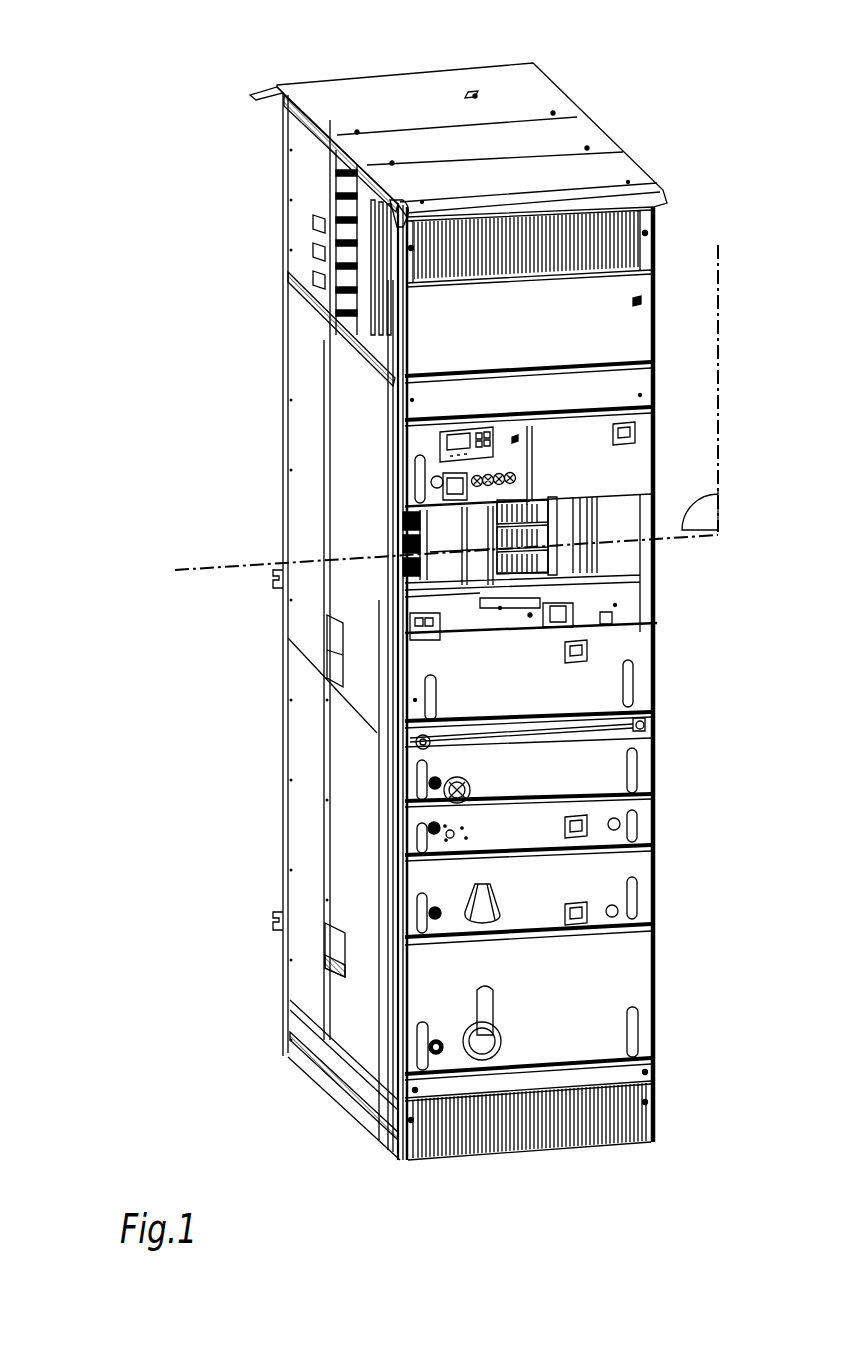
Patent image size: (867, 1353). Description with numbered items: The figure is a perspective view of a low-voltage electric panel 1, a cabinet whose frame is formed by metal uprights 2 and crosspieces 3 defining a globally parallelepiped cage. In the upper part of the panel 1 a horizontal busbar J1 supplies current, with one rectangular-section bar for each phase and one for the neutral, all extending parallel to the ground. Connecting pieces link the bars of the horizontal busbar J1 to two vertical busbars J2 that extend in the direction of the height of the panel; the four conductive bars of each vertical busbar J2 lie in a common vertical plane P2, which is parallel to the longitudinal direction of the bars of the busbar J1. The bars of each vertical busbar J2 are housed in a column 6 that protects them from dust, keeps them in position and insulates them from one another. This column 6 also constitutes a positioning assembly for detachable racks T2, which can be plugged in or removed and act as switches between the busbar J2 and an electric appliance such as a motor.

The electric panel 1 is at (146, 89).
The uprights 2 is at (327, 488).
The crosspieces 3 is at (657, 200).
The column 6 is at (567, 511).
The horizontal busbar J1 is at (322, 190).
The vertical busbars J2 is at (435, 565).
The vertical plane P2 is at (446, 407).
The racks T2 is at (642, 767).